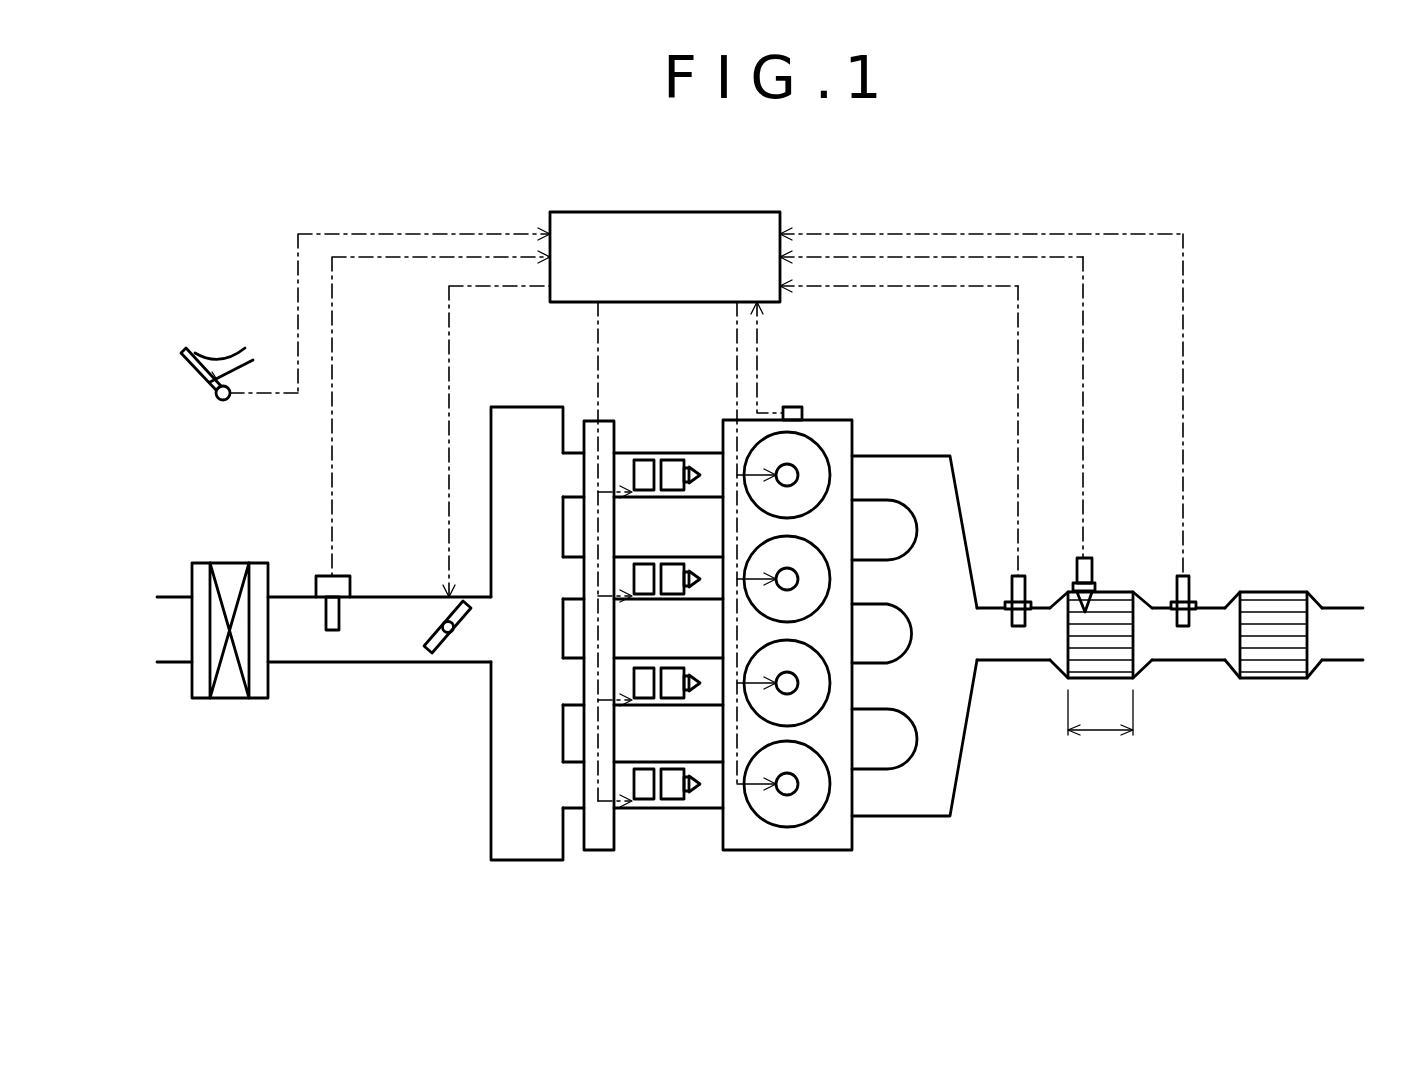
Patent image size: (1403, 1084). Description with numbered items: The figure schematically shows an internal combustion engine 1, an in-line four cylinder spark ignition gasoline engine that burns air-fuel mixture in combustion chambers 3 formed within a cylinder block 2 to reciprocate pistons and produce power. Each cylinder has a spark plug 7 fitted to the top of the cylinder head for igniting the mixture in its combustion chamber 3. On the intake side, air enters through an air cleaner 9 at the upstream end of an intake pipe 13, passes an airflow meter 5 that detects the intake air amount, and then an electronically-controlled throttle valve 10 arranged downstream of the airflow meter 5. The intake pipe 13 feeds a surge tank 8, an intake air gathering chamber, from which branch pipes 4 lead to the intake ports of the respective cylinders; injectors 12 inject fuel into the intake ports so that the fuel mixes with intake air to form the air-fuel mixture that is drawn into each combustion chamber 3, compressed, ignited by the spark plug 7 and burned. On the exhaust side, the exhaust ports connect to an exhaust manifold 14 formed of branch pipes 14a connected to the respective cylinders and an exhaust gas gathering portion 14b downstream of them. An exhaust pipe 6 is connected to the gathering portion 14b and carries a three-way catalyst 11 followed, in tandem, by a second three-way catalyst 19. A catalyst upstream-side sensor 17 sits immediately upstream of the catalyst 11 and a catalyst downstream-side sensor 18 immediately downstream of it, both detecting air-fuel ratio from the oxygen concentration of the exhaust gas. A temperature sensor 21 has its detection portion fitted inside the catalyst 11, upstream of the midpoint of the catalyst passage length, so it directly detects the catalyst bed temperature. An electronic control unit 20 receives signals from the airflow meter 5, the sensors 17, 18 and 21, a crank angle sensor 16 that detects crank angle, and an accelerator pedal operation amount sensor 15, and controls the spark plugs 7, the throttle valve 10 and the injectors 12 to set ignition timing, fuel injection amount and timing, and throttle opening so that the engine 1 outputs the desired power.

The internal combustion engine 1 is at (467, 810).
The cylinder block 2 is at (825, 851).
The combustion chamber 3 is at (802, 820).
The branch pipe 4 is at (712, 813).
The airflow meter 5 is at (345, 577).
The exhaust pipe 6 is at (1007, 662).
The spark plug 7 is at (780, 796).
The surge tank 8 is at (532, 861).
The air cleaner 9 is at (232, 698).
The throttle valve 10 is at (440, 655).
The catalyst 11 is at (1110, 592).
The injector 12 is at (672, 801).
The intake pipe 13 is at (330, 663).
The exhaust manifold 14 is at (962, 802).
The branch pipe 14a is at (891, 818).
The exhaust gas gathering portion 14b is at (964, 766).
The accelerator pedal operation amount sensor 15 is at (228, 400).
The crank angle sensor 16 is at (797, 407).
The catalyst upstream-side sensor 17 is at (1020, 576).
The catalyst downstream-side sensor 18 is at (1184, 576).
The catalyst 19 is at (1272, 680).
The electronic control unit 20 is at (712, 212).
The temperature sensor 21 is at (1086, 558).